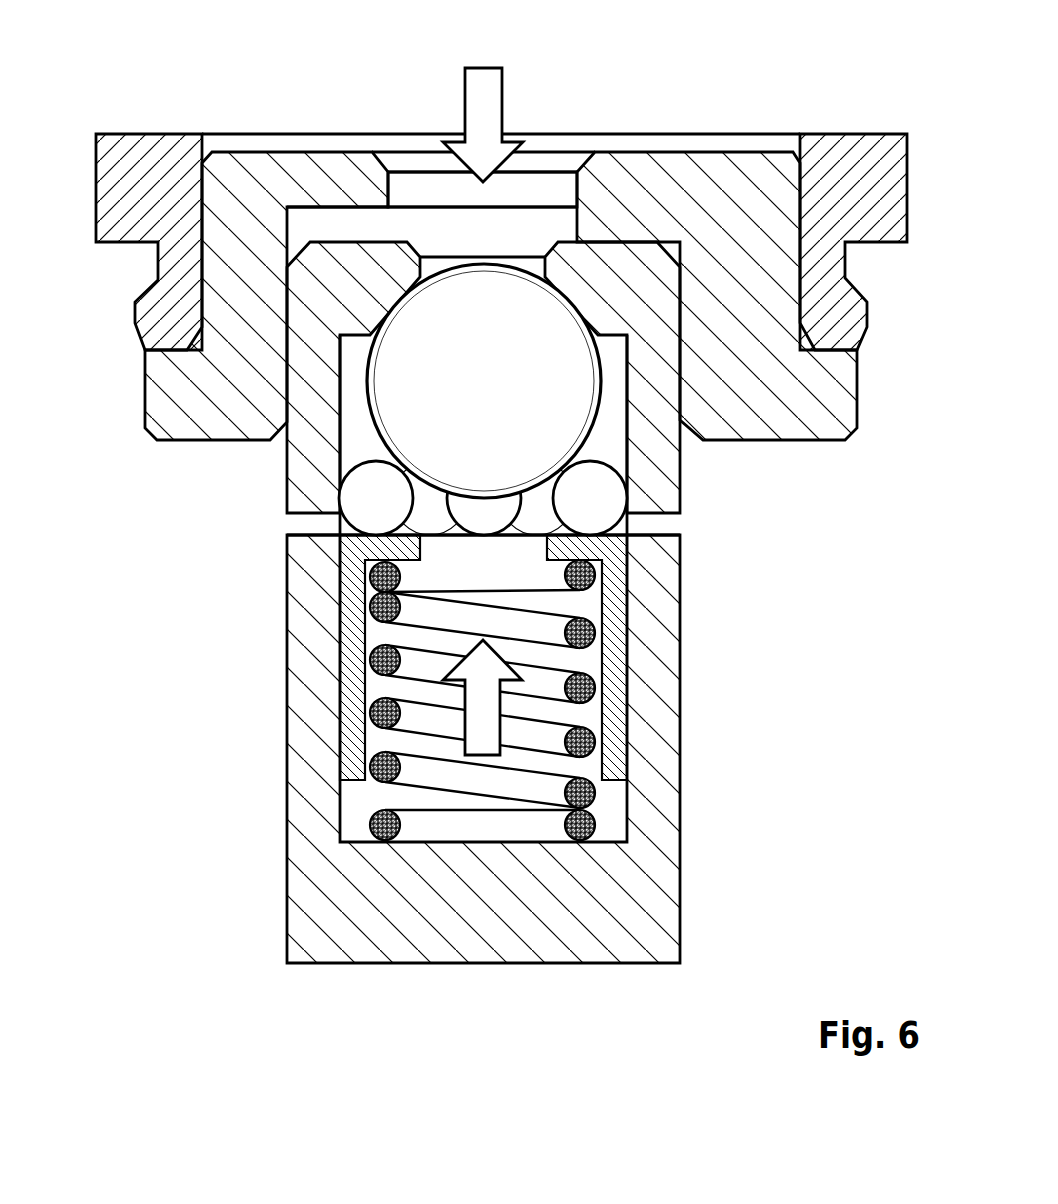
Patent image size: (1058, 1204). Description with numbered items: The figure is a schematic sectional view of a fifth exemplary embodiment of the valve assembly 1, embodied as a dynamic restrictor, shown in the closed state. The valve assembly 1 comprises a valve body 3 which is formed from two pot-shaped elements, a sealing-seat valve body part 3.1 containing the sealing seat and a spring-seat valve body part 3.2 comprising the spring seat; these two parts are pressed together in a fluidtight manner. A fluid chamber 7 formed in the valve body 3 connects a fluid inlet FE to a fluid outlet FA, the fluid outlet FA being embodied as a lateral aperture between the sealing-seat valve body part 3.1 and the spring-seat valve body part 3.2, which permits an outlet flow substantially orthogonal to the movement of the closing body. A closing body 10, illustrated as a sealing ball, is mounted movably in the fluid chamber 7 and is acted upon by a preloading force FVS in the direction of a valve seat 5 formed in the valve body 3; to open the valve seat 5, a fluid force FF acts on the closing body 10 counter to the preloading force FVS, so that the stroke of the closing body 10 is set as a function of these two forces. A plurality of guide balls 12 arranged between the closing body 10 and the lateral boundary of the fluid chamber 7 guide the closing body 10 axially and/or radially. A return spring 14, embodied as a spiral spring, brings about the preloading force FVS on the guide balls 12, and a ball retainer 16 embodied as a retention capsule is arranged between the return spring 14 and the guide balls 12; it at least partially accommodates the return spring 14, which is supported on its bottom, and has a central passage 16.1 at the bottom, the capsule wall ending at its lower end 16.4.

The valve assembly 1 is at (148, 110).
The valve body 3 is at (530, 602).
The sealing-seat valve body part 3.1 is at (652, 469).
The spring-seat valve body part 3.2 is at (650, 912).
The valve seat 5 is at (405, 302).
The fluid chamber 7 is at (350, 418).
The closing body 10 is at (547, 327).
The guide ball 12 is at (483, 498).
The return spring 14 is at (582, 741).
The ball retainer 16 is at (501, 680).
The central passage 16.1 is at (465, 548).
The spring cup wall end 16.4 is at (360, 782).
The fluid inlet FE is at (413, 185).
The fluid force FF is at (484, 87).
The fluid outlet FA is at (300, 521).
The preloading force FVS is at (478, 723).